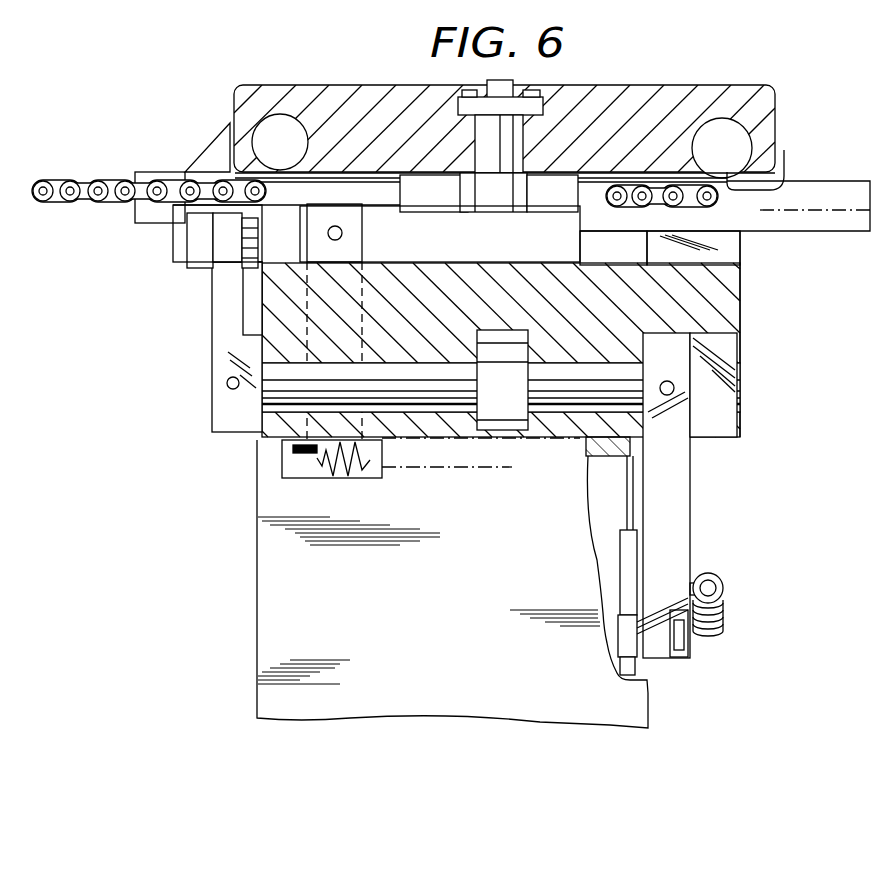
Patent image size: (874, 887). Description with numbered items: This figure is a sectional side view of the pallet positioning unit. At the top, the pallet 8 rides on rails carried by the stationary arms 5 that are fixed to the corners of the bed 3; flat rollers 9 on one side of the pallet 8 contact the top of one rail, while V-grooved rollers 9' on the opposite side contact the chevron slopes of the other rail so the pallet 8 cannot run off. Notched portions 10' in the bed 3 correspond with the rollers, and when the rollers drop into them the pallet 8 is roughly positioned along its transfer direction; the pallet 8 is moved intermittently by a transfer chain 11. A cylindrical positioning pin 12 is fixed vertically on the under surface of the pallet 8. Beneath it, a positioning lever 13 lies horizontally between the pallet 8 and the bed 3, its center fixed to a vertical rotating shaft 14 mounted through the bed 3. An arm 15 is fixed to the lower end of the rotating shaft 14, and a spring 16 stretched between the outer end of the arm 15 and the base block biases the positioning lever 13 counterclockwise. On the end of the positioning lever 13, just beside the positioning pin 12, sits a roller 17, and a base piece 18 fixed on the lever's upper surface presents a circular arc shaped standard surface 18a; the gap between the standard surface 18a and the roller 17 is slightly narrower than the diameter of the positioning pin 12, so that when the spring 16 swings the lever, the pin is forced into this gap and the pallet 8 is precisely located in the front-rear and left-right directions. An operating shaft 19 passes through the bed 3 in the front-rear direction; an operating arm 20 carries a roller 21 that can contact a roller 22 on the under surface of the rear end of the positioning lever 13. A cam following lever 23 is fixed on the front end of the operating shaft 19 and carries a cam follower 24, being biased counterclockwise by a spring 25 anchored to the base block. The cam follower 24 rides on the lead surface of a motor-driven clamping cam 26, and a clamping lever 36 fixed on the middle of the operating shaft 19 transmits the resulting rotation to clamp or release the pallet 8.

The bed 3 is at (730, 312).
The stationary arm 5 is at (735, 262).
The pallet 8 is at (700, 108).
The roller 9 is at (497, 123).
The roller 9' is at (499, 145).
The notched portion 10' is at (566, 222).
The transfer chain 11 is at (72, 180).
The positioning pin 12 is at (535, 118).
The positioning lever 13 is at (390, 252).
The rotating shaft 14 is at (360, 338).
The arm 15 is at (298, 476).
The spring 16 is at (420, 468).
The roller 17 is at (582, 205).
The base piece 18 is at (432, 200).
The standard surface 18a is at (478, 198).
The operating shaft 19 is at (578, 382).
The operating arm 20 is at (222, 348).
The roller 21 is at (200, 266).
The roller 22 is at (176, 254).
The cam following lever 23 is at (675, 508).
The cam follower 24 is at (625, 650).
The spring 25 is at (727, 610).
The clamping cam 26 is at (624, 556).
The clamping lever 36 is at (512, 412).